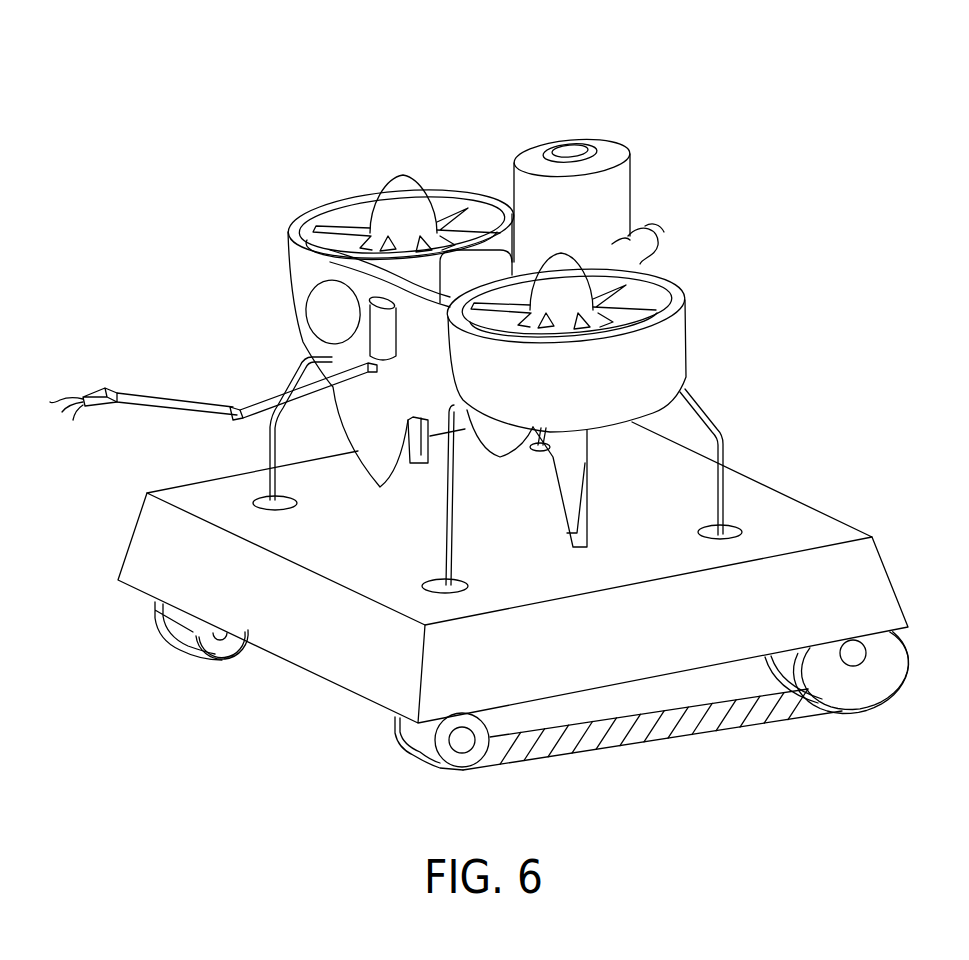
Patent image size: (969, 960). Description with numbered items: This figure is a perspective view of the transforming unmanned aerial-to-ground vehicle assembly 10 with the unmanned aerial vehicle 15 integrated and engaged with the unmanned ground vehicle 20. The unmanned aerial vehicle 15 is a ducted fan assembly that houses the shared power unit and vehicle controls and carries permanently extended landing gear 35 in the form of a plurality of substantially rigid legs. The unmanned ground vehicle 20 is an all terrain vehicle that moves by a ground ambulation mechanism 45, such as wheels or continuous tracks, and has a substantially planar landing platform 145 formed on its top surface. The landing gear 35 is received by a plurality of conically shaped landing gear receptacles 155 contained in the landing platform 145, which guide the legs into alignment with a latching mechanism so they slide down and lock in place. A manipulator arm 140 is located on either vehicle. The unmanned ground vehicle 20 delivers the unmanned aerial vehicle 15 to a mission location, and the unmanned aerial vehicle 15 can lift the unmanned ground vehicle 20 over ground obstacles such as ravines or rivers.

The transforming unmanned aerial-to-ground vehicle assembly 10 is at (213, 71).
The unmanned aerial vehicle 15 is at (371, 157).
The unmanned ground vehicle 20 is at (90, 502).
The landing gear 35 is at (735, 422).
The ground ambulation mechanism 45 is at (622, 763).
The manipulator arm 140 is at (126, 372).
The landing platform 145 is at (799, 514).
The landing gear receptacles 155 is at (264, 528).